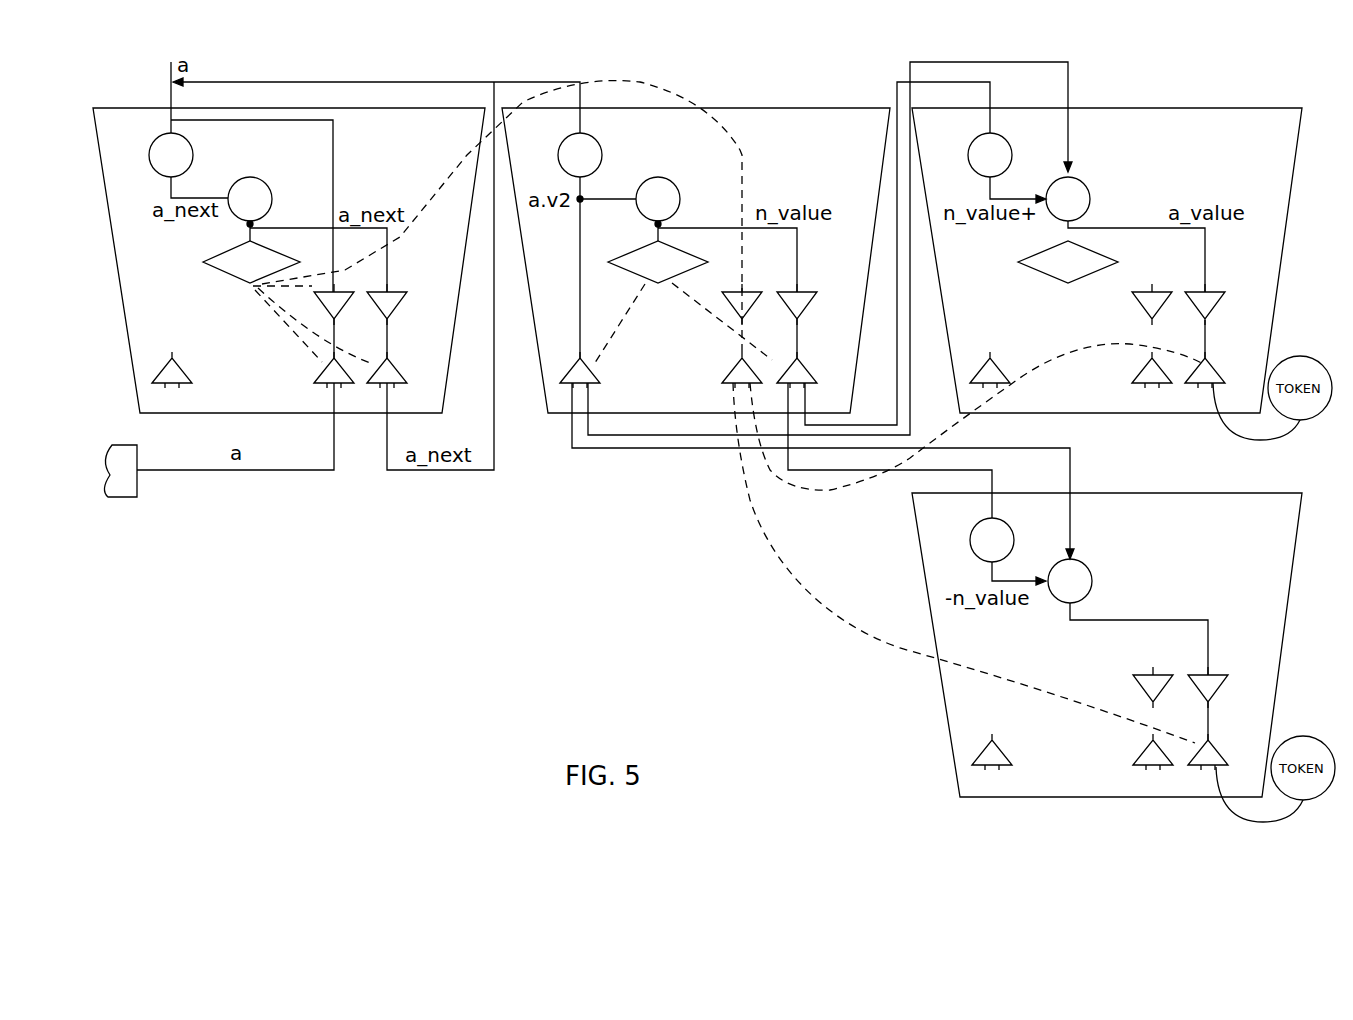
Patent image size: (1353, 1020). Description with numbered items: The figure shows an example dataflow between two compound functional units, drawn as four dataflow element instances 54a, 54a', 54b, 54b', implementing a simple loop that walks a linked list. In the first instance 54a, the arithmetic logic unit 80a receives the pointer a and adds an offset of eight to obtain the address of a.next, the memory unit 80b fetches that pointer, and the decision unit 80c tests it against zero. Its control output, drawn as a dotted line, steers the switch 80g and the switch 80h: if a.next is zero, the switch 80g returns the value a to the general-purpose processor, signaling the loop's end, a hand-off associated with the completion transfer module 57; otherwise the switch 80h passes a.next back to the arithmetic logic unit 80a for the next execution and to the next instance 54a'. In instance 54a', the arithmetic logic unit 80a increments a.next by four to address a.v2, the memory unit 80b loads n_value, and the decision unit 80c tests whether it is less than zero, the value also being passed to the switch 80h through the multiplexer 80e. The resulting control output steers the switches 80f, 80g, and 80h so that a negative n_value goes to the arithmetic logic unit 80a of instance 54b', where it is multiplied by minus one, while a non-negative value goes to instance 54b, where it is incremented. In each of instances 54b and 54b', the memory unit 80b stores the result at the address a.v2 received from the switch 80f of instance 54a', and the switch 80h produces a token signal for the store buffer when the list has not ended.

The dataflow element instance 54a is at (285, 231).
The dataflow element instance 54a' is at (696, 231).
The dataflow element instance 54b is at (1107, 231).
The dataflow element instance 54b' is at (1107, 616).
The completion transfer module 57 is at (112, 497).
The arithmetic logic unit 80a is at (151, 160).
The memory unit 80b is at (271, 190).
The decision unit 80c is at (205, 263).
The multiplexer 80e is at (404, 300).
The switch 80f is at (158, 375).
The switch 80g is at (318, 375).
The switch 80h is at (404, 372).